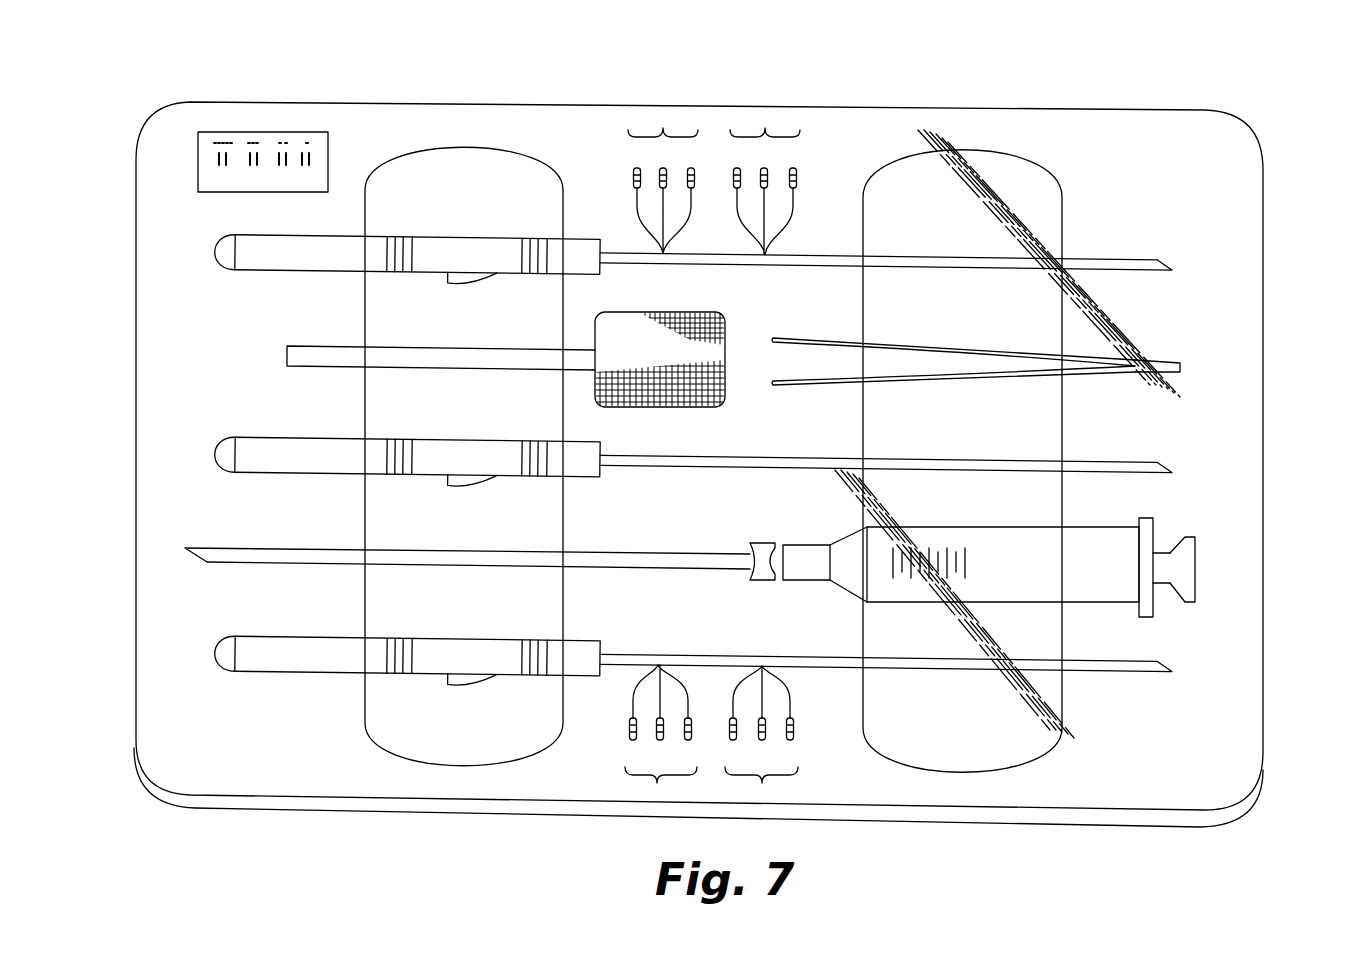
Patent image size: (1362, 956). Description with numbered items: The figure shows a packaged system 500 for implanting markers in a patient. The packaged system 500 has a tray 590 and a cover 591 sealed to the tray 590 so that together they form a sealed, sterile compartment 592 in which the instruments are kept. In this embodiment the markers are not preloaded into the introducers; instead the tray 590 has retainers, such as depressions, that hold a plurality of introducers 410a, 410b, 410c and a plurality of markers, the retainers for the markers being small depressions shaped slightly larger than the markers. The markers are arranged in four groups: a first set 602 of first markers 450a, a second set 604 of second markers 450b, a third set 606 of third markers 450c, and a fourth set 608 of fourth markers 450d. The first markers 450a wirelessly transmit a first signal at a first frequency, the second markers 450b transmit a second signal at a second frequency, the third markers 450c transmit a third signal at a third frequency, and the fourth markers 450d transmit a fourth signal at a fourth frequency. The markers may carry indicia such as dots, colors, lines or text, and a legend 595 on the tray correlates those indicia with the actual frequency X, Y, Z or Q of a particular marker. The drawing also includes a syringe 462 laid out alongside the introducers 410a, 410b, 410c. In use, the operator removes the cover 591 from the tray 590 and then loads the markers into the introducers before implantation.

The packaged system 500 is at (1203, 79).
The tray 590 is at (252, 802).
The cover 591 is at (170, 293).
The sealed, sterile compartment 592 is at (300, 756).
The legend 595 is at (220, 132).
The introducer 410a is at (1129, 246).
The introducer 410b is at (1121, 448).
The introducer 410c is at (1127, 682).
The first marker 450a is at (657, 655).
The second marker 450b is at (762, 656).
The third marker 450c is at (663, 263).
The fourth marker 450d is at (765, 264).
The syringe 462 is at (1187, 573).
The first set of first markers 602 is at (657, 783).
The second set of second markers 604 is at (762, 783).
The third set of third markers 606 is at (663, 128).
The fourth set of fourth markers 608 is at (765, 128).